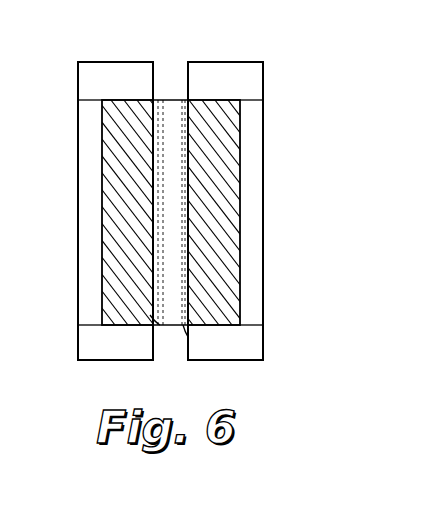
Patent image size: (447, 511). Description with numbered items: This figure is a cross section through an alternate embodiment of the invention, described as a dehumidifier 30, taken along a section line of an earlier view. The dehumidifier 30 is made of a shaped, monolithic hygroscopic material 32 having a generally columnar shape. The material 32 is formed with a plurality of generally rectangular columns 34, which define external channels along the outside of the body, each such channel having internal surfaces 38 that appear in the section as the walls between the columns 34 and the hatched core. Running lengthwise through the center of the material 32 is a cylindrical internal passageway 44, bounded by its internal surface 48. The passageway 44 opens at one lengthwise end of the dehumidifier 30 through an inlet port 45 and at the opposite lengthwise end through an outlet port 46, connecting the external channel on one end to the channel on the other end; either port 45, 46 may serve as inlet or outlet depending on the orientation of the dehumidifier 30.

The dehumidifier 30 is at (196, 218).
The hygroscopic material 32 is at (115, 61).
The rectangular columns 34 is at (78, 276).
The internal surfaces 38 is at (107, 80).
The cylindrical internal passageway 44 is at (170, 105).
The inlet port 45 is at (184, 327).
The outlet port 46 is at (154, 99).
The internal surface 48 is at (155, 313).